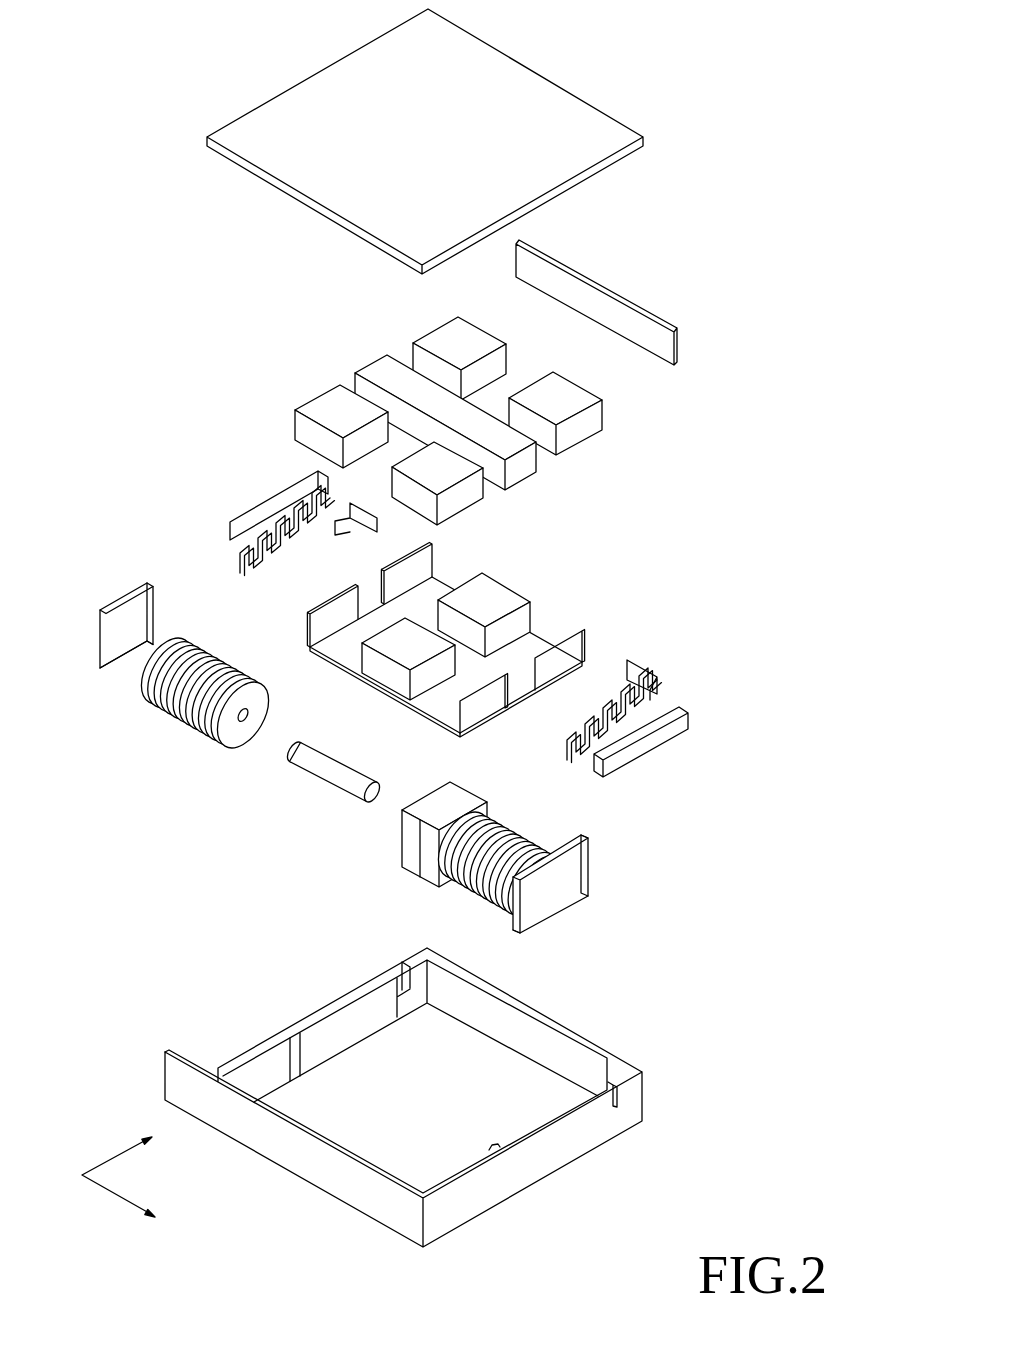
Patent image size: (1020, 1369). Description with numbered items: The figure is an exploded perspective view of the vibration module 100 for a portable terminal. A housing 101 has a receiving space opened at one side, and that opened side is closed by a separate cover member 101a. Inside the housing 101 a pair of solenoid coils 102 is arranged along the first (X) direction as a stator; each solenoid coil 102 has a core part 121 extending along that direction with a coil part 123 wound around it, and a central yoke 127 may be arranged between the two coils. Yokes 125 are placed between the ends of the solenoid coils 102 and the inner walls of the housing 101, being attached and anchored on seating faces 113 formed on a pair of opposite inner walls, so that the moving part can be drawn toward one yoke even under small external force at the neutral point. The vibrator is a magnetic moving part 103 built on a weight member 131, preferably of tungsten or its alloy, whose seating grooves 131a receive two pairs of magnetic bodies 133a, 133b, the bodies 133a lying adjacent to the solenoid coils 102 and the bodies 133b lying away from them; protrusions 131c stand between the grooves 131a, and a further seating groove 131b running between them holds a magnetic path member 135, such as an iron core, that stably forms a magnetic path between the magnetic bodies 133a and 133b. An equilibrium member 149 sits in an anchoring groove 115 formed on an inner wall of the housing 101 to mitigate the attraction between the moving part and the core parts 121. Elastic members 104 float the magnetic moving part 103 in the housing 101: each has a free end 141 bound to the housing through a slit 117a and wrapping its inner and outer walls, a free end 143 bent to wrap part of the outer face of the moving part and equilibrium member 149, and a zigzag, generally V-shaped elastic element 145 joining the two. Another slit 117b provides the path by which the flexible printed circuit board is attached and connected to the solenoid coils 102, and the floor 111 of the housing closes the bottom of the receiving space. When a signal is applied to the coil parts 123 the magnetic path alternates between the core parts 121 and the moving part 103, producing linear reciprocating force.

The vibration module 100 is at (182, 309).
The housing 101 is at (428, 1084).
The cover member 101a is at (307, 173).
The solenoid coil 102 is at (360, 758).
The magnetic moving part 103 is at (493, 522).
The elastic member 104 is at (476, 617).
The bottom surface 111 is at (373, 1140).
The seating face 113 is at (248, 1070).
The anchoring groove 115 is at (563, 1049).
The slit 117a is at (402, 959).
The slit 117b is at (217, 1070).
The core part 121 is at (317, 762).
The coil part 123 is at (184, 722).
The yoke 125 is at (100, 663).
The central yoke 127 is at (408, 847).
The weight member 131 is at (482, 710).
The seating groove 131a is at (340, 655).
The seating groove 131b is at (488, 587).
The protrusion 131c is at (398, 657).
The magnetic body 133a is at (325, 402).
The magnetic body 133b is at (442, 332).
The magnetic path member 135 is at (380, 365).
The free end 141 is at (279, 496).
The free end 143 is at (364, 528).
The elastic element 145 is at (286, 554).
The equilibrium member 149 is at (603, 282).